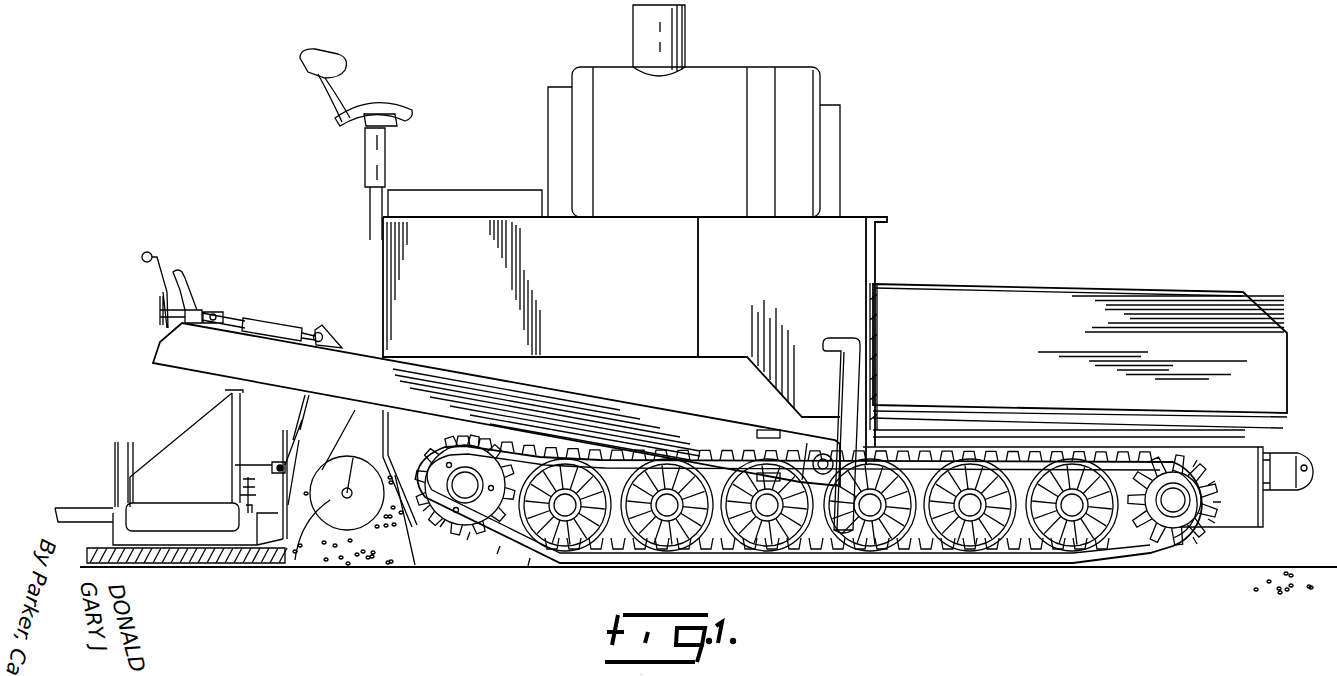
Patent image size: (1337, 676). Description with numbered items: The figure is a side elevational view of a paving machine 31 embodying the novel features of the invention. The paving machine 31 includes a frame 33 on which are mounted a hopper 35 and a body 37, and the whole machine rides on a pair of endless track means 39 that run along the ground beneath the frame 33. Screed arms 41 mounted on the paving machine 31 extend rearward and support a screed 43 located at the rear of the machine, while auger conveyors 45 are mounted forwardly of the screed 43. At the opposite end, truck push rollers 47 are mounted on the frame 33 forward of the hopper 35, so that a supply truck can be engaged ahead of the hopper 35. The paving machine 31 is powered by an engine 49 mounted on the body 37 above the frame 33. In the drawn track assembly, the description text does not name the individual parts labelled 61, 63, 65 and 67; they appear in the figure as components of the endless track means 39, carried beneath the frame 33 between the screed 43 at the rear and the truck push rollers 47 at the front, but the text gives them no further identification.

The paving machine 31 is at (905, 261).
The frame 33 is at (1243, 508).
The hopper 35 is at (1168, 310).
The body 37 is at (837, 240).
The endless track means 39 is at (1187, 568).
The screed arms 41 is at (627, 413).
The screed 43 is at (214, 537).
The auger conveyors 45 is at (347, 517).
The truck push rollers 47 is at (1308, 460).
The engine 49 is at (735, 72).
The track shoes 61 is at (898, 567).
The road wheels 63 is at (660, 535).
The rear idler sprocket 65 is at (1142, 532).
The drive sprocket 67 is at (500, 503).